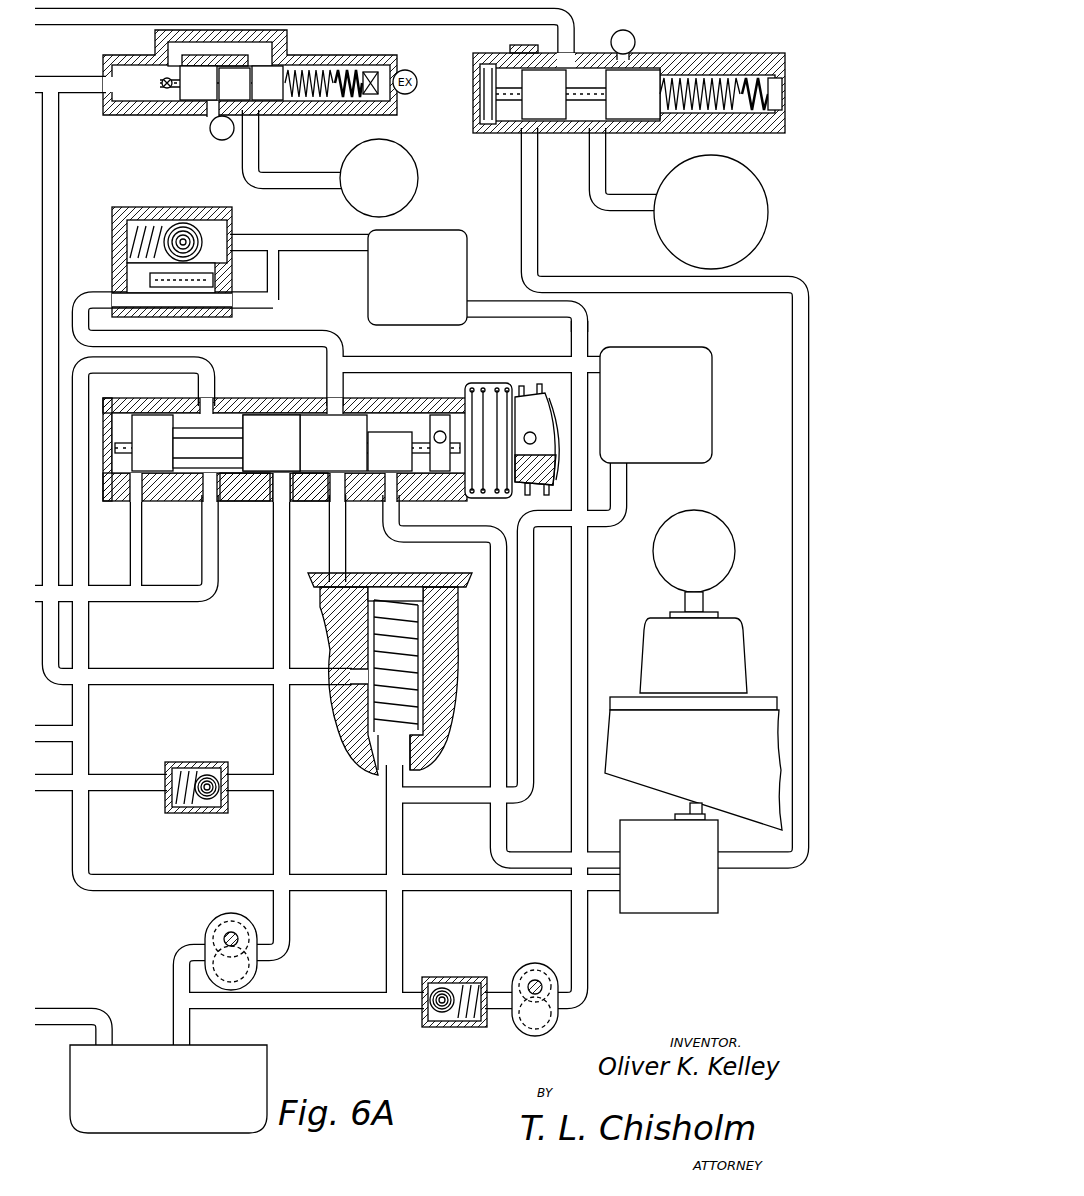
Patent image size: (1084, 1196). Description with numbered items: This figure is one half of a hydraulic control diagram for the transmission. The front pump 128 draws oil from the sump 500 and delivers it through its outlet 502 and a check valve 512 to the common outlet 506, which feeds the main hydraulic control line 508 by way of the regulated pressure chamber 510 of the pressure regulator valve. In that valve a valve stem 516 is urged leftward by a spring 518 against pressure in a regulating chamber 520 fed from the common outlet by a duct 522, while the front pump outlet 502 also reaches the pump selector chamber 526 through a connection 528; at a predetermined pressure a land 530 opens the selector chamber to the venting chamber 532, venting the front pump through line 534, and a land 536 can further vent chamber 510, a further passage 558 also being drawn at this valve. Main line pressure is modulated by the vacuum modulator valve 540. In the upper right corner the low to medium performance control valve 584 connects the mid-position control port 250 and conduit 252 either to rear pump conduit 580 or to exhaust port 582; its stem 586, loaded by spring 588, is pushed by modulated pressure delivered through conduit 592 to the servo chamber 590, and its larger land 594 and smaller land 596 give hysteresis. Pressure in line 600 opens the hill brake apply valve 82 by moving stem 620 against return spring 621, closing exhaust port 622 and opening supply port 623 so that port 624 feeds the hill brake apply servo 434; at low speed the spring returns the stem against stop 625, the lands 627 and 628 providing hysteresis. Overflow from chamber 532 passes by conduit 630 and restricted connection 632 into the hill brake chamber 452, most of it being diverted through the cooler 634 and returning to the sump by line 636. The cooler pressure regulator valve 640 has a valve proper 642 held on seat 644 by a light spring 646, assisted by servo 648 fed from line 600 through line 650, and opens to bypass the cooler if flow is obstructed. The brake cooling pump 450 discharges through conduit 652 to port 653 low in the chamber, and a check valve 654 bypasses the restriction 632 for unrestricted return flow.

The hill brake apply valve 82 is at (150, 116).
The front pump 128 is at (218, 928).
The mid-position control port 250 is at (756, 186).
The conduit 252 is at (606, 198).
The hill brake apply servo 434 is at (417, 172).
The brake cooling pump 450 is at (556, 1018).
The hill brake chamber 452 is at (450, 236).
The sump 500 is at (250, 1073).
The front pump outlet 502 is at (290, 847).
The common outlet 506 is at (216, 575).
The main hydraulic control line 508 is at (214, 390).
The regulated pressure chamber 510 is at (212, 485).
The check valve 512 is at (226, 766).
The valve stem 516 is at (207, 438).
The spring 518 is at (541, 386).
The regulating chamber 520 is at (130, 420).
The duct 522 is at (140, 532).
The pump selector chamber 526 is at (280, 488).
The connection 528 is at (284, 586).
The land 530 is at (345, 425).
The venting chamber 532 is at (335, 488).
The line 534 is at (342, 572).
The land 536 is at (262, 410).
The vacuum modulator valve 540 is at (748, 682).
The line 558 is at (390, 490).
The conduit 580 is at (568, 24).
The exhaust port 582 is at (634, 34).
The low to medium performance control valve 584 is at (754, 64).
The valve stem 586 is at (598, 133).
The spring 588 is at (762, 68).
The stator control valve operating chamber 590 is at (523, 62).
The conduit 592 is at (524, 205).
The land 594 is at (524, 133).
The land 596 is at (620, 133).
The line 600 is at (104, 78).
The valve stem 620 is at (243, 88).
The return spring 621 is at (376, 66).
The exhaust port 622 is at (222, 141).
The supply port 623 is at (272, 58).
The port 624 is at (292, 178).
The stop 625 is at (170, 84).
The land 627 is at (282, 88).
The land 628 is at (207, 115).
The conduit 630 is at (298, 242).
The restricted connection 632 is at (278, 265).
The cooler 634 is at (672, 350).
The line 636 is at (624, 508).
The cooler pressure regulator valve 640 is at (440, 700).
The valve proper 642 is at (430, 590).
The seat 644 is at (385, 585).
The light spring 646 is at (425, 648).
The pressure chamber 648 is at (352, 662).
The line 650 is at (176, 680).
The conduit 652 is at (584, 588).
The port 653 is at (475, 305).
The check valve 654 is at (185, 235).